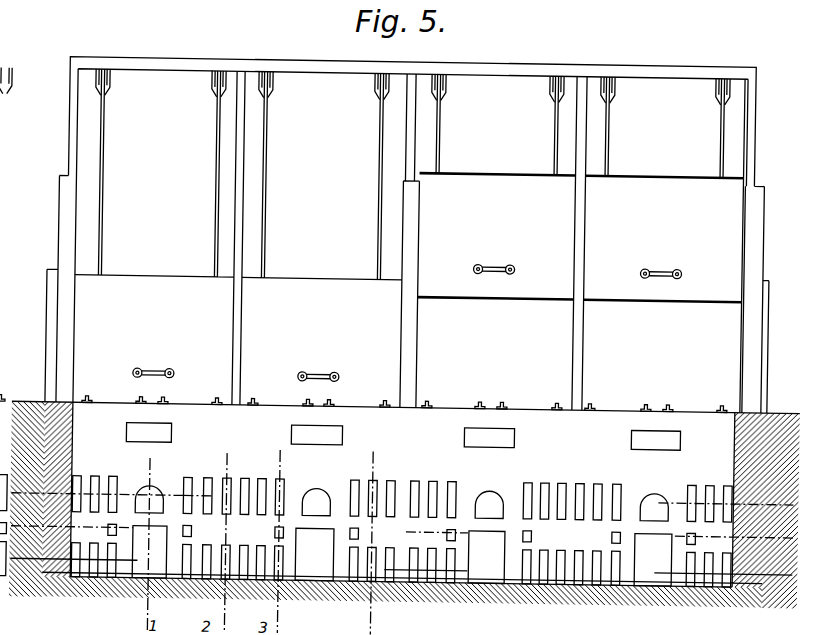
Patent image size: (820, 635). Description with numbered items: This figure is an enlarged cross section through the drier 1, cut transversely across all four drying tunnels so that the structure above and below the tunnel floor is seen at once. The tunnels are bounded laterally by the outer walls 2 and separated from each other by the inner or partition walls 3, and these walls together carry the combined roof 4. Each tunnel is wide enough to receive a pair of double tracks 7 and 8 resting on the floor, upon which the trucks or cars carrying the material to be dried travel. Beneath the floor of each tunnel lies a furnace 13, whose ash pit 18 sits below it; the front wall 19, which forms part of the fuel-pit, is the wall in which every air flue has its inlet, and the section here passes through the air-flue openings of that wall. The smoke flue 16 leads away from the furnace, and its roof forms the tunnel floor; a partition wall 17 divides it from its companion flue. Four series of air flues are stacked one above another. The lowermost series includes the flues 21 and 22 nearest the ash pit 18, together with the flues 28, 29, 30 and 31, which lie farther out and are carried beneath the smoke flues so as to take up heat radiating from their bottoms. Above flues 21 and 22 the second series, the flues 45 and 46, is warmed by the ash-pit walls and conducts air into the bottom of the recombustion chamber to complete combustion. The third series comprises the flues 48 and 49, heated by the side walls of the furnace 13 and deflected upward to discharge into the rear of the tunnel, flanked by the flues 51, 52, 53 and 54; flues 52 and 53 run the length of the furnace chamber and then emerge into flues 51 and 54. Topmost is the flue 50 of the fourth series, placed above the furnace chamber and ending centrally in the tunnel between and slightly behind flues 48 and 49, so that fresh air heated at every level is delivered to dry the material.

The drier 1 is at (153, 311).
The outer walls 2 is at (227, 264).
The inner or partition walls 3 is at (282, 315).
The roof 4 is at (370, 318).
The track 7 is at (138, 401).
The track 8 is at (382, 401).
The furnace 13 is at (142, 492).
The smoke flue 16 is at (401, 578).
The partition wall 17 is at (402, 520).
The ash pit 18 is at (401, 549).
The front wall 19 is at (435, 420).
The air flue 21 is at (114, 580).
The air flue 22 is at (172, 583).
The air flue 28 is at (66, 585).
The air flue 29 is at (90, 583).
The air flue 30 is at (208, 583).
The air flue 31 is at (246, 583).
The air flue 45 is at (276, 534).
The air flue 46 is at (194, 534).
The air flue 48 is at (114, 481).
The air flue 49 is at (151, 490).
The air flue 50 is at (172, 436).
The air flue 51 is at (78, 481).
The air flue 52 is at (96, 481).
The air flue 53 is at (209, 481).
The air flue 54 is at (228, 481).